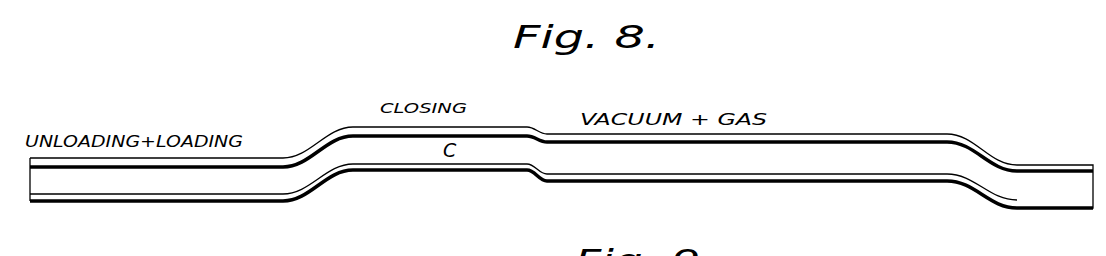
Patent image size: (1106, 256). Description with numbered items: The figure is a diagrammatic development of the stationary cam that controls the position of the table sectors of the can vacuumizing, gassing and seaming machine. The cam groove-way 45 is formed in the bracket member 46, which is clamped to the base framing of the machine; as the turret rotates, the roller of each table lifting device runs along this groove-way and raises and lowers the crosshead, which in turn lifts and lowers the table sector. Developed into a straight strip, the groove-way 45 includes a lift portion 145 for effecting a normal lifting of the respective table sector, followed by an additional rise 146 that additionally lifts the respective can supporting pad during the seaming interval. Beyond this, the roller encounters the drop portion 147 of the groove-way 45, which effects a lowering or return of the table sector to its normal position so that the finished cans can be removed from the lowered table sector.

The cam groove-way 45 is at (747, 157).
The bracket member 46 is at (963, 123).
The lift portion 145 is at (976, 191).
The additional rise 146 is at (513, 173).
The drop portion 147 is at (335, 183).